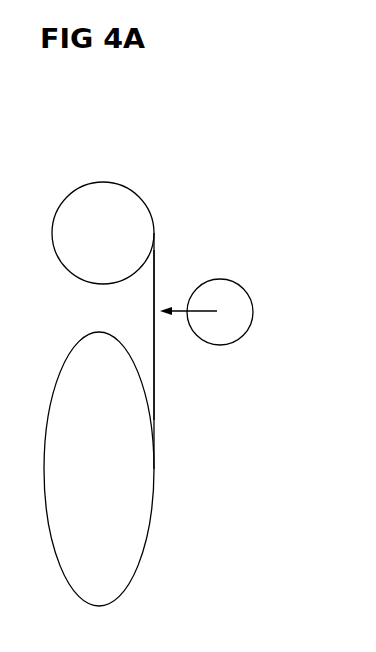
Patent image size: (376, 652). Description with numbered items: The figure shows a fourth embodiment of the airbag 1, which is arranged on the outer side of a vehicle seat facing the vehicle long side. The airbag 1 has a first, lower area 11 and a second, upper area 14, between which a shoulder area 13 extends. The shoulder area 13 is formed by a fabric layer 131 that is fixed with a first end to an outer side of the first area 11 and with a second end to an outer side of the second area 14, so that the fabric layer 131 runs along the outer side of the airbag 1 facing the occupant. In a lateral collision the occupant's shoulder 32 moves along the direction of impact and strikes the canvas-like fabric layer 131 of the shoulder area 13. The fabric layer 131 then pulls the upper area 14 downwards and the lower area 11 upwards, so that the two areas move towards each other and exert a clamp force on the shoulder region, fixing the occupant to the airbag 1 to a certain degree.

The airbag 1 is at (52, 179).
The second upper area 14 is at (133, 213).
The first lower area 11 is at (125, 550).
The shoulder area 13 is at (155, 355).
The fabric layer 131 is at (155, 287).
The shoulder 32 is at (232, 327).